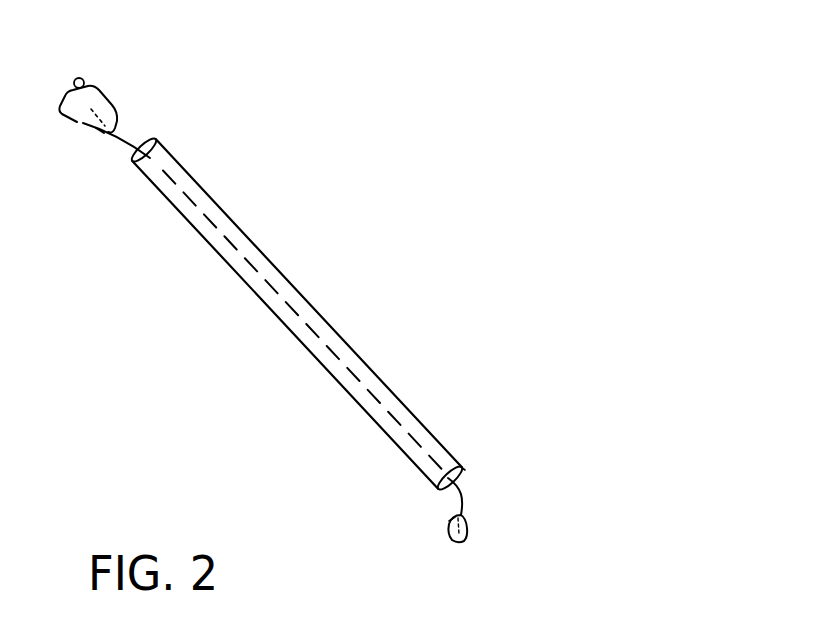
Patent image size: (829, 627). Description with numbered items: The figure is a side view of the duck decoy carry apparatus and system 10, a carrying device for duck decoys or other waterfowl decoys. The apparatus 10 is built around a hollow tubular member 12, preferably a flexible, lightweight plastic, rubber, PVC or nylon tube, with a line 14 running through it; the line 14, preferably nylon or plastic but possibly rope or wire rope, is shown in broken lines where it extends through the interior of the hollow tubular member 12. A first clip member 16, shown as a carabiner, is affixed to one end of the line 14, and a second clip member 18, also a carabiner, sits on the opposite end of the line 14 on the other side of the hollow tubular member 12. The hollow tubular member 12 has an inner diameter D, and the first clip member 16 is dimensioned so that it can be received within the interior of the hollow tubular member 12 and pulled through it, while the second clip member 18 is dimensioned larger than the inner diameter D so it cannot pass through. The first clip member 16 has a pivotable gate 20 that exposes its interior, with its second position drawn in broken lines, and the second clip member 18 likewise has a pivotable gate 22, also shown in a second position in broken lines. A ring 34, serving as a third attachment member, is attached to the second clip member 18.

The duck decoy carry apparatus and system 10 is at (362, 122).
The hollow tubular member 12 is at (250, 238).
The line 14 is at (127, 138).
The first clip member 16 is at (468, 528).
The second clip member 18 is at (93, 88).
The gate 20 is at (449, 522).
The gate 22 is at (102, 132).
The ring 34 is at (74, 83).
The inner diameter D is at (465, 468).